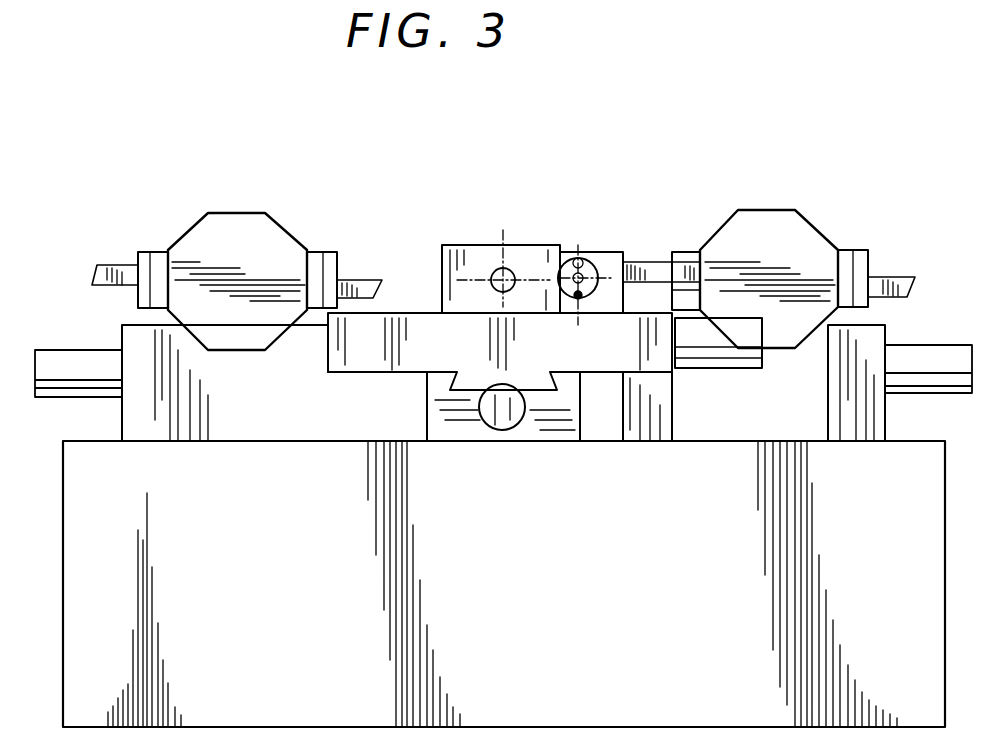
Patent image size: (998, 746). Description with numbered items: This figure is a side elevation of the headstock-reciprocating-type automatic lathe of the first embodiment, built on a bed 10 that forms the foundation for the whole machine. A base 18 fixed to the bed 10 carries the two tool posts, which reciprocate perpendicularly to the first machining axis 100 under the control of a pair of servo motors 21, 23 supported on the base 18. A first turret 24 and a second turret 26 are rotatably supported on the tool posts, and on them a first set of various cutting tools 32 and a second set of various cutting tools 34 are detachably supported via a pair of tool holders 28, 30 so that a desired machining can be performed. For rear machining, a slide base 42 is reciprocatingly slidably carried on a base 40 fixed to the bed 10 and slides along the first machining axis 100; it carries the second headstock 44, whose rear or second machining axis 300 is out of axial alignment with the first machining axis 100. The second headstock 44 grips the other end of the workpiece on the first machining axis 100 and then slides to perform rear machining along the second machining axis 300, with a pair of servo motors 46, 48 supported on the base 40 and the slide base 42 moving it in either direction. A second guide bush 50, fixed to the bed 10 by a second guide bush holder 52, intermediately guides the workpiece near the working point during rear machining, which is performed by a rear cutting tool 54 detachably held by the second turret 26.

The bed 10 is at (925, 493).
The base 18 is at (197, 427).
The servo motor 21 is at (55, 360).
The servo motor 23 is at (935, 358).
The first turret 24 is at (230, 230).
The second turret 26 is at (787, 235).
The tool holder 28 is at (313, 263).
The tool holder 30 is at (848, 262).
The first set of cutting tools 32 is at (363, 288).
The second set of cutting tools 34 is at (898, 285).
The base 40 is at (455, 425).
The slide base 42 is at (352, 360).
The second headstock 44 is at (540, 250).
The servo motor 46 is at (508, 426).
The servo motor 48 is at (713, 353).
The second guide bush 50 is at (584, 268).
The second guide bush holder 52 is at (608, 417).
The rear cutting tool 54 is at (650, 268).
The first machining axis 100 is at (505, 275).
The second machining axis 300 is at (597, 277).